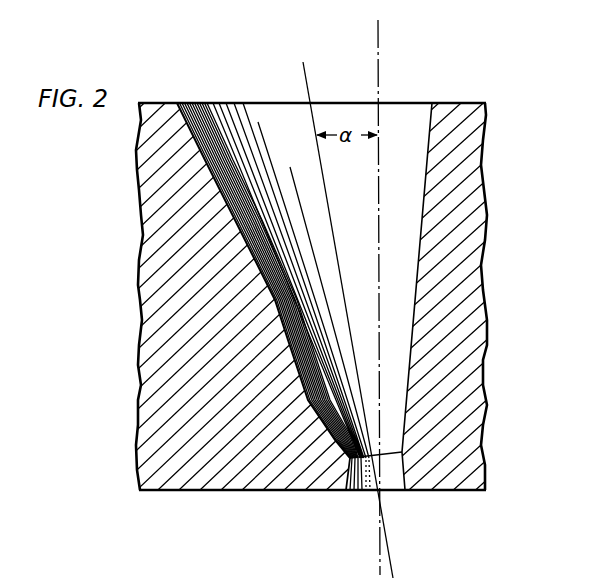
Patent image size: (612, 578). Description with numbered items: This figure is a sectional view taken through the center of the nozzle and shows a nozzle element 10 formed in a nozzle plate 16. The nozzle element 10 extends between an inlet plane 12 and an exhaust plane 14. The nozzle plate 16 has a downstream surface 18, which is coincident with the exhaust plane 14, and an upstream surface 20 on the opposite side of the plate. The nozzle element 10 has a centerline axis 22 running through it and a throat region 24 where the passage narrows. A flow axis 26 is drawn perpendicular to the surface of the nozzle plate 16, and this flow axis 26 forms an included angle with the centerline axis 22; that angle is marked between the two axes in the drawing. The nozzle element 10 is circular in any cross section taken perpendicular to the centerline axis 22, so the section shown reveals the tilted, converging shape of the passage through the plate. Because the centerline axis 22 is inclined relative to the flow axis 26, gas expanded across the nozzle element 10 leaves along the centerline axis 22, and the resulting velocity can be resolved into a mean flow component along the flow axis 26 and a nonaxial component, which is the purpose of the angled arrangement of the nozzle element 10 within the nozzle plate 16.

The nozzle element 10 is at (97, 216).
The inlet plane 12 is at (368, 492).
The exhaust plane 14 is at (260, 102).
The nozzle plate 16 is at (470, 189).
The downstream surface 18 is at (457, 102).
The upstream surface 20 is at (232, 491).
The centerline axis 22 is at (304, 72).
The throat region 24 is at (398, 482).
The flow axis 26 is at (381, 45).